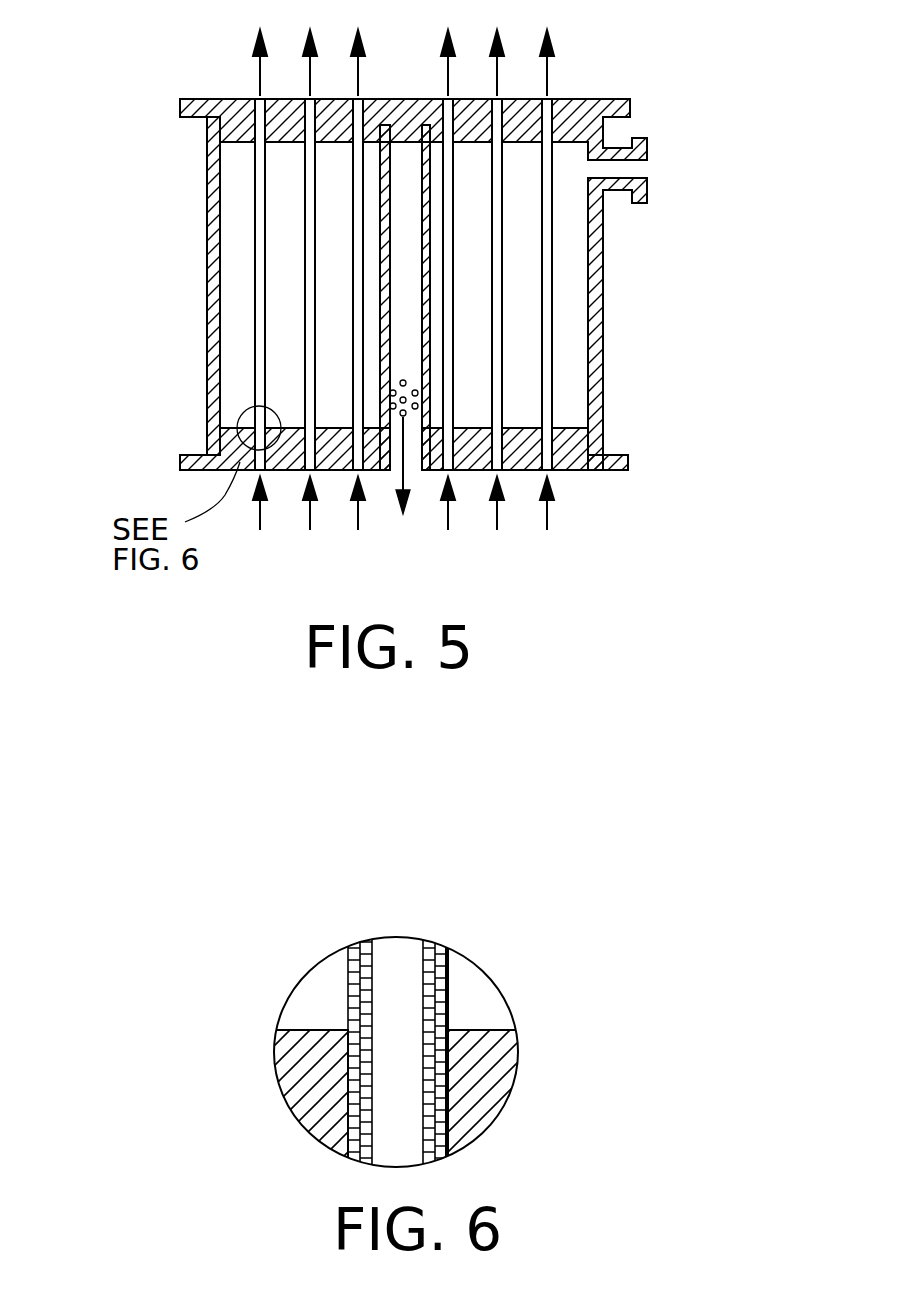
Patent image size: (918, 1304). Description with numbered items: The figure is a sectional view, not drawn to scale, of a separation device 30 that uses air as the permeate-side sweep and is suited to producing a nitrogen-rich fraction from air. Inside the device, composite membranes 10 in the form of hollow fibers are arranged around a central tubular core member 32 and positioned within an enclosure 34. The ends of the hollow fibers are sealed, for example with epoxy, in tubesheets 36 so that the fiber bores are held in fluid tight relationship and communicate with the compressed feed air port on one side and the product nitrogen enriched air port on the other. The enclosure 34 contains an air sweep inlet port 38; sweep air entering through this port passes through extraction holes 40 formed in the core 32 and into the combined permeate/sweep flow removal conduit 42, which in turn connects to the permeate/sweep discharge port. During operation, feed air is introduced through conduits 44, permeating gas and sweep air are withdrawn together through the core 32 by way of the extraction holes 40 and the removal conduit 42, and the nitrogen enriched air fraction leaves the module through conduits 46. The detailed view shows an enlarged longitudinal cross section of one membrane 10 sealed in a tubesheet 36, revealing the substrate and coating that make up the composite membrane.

In FIG. 5, the separation device 30 is at (418, 319).
In FIG. 5, the composite membrane 10 is at (550, 313).
In FIG. 6, the composite membrane 10 is at (390, 942).
In FIG. 5, the central tubular core member 32 is at (383, 203).
In FIG. 5, the enclosure 34 is at (607, 390).
In FIG. 5, the tubesheet 36 is at (243, 128).
In FIG. 5, the air sweep inlet port 38 is at (418, 392).
In FIG. 5, the extraction holes 40 is at (388, 408).
In FIG. 5, the combined permeate/sweep flow removal conduit 42 is at (397, 482).
In FIG. 5, the conduits (feed air) 44 is at (548, 522).
In FIG. 5, the conduits (nitrogen enriched air) 46 is at (550, 78).